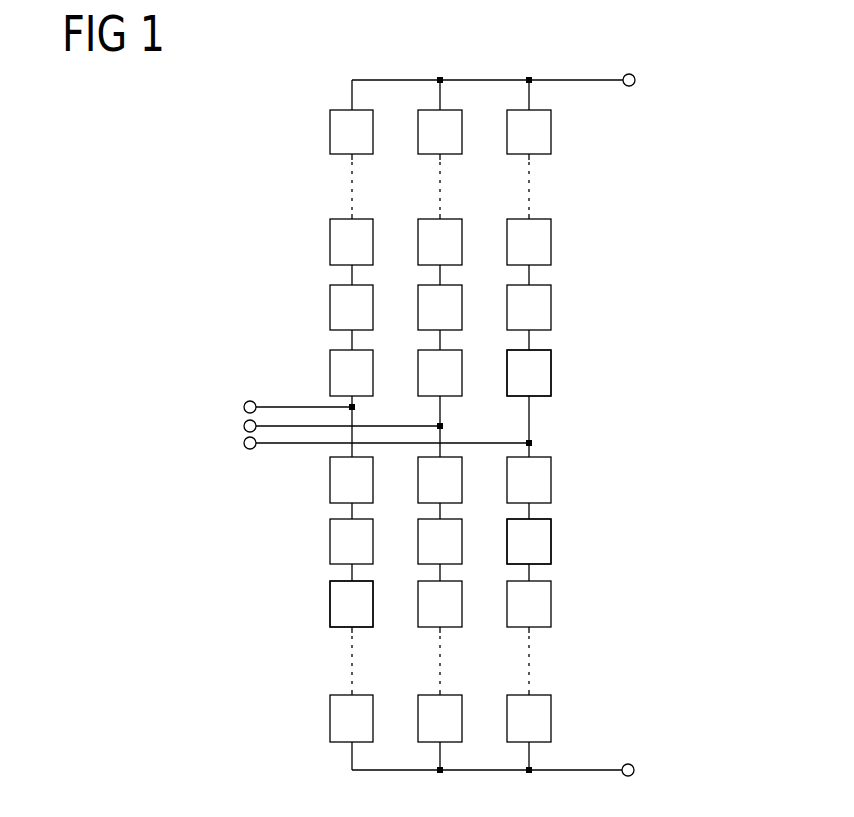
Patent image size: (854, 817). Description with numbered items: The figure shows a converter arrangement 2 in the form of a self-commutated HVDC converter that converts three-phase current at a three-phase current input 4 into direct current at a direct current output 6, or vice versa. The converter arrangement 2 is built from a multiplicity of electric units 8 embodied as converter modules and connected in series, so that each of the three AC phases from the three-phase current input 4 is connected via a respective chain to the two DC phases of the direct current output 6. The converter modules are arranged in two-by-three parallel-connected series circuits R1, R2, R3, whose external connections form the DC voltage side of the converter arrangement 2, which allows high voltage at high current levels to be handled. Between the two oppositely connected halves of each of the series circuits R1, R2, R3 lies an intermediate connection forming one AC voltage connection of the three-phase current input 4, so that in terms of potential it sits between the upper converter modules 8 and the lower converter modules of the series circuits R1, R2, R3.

The converter arrangement 2 is at (645, 308).
The three-phase current input 4 is at (212, 418).
The direct current output 6 is at (664, 86).
The electric unit 8 is at (551, 380).
The first series circuit R1 is at (352, 217).
The second series circuit R2 is at (440, 217).
The third series circuit R3 is at (529, 217).